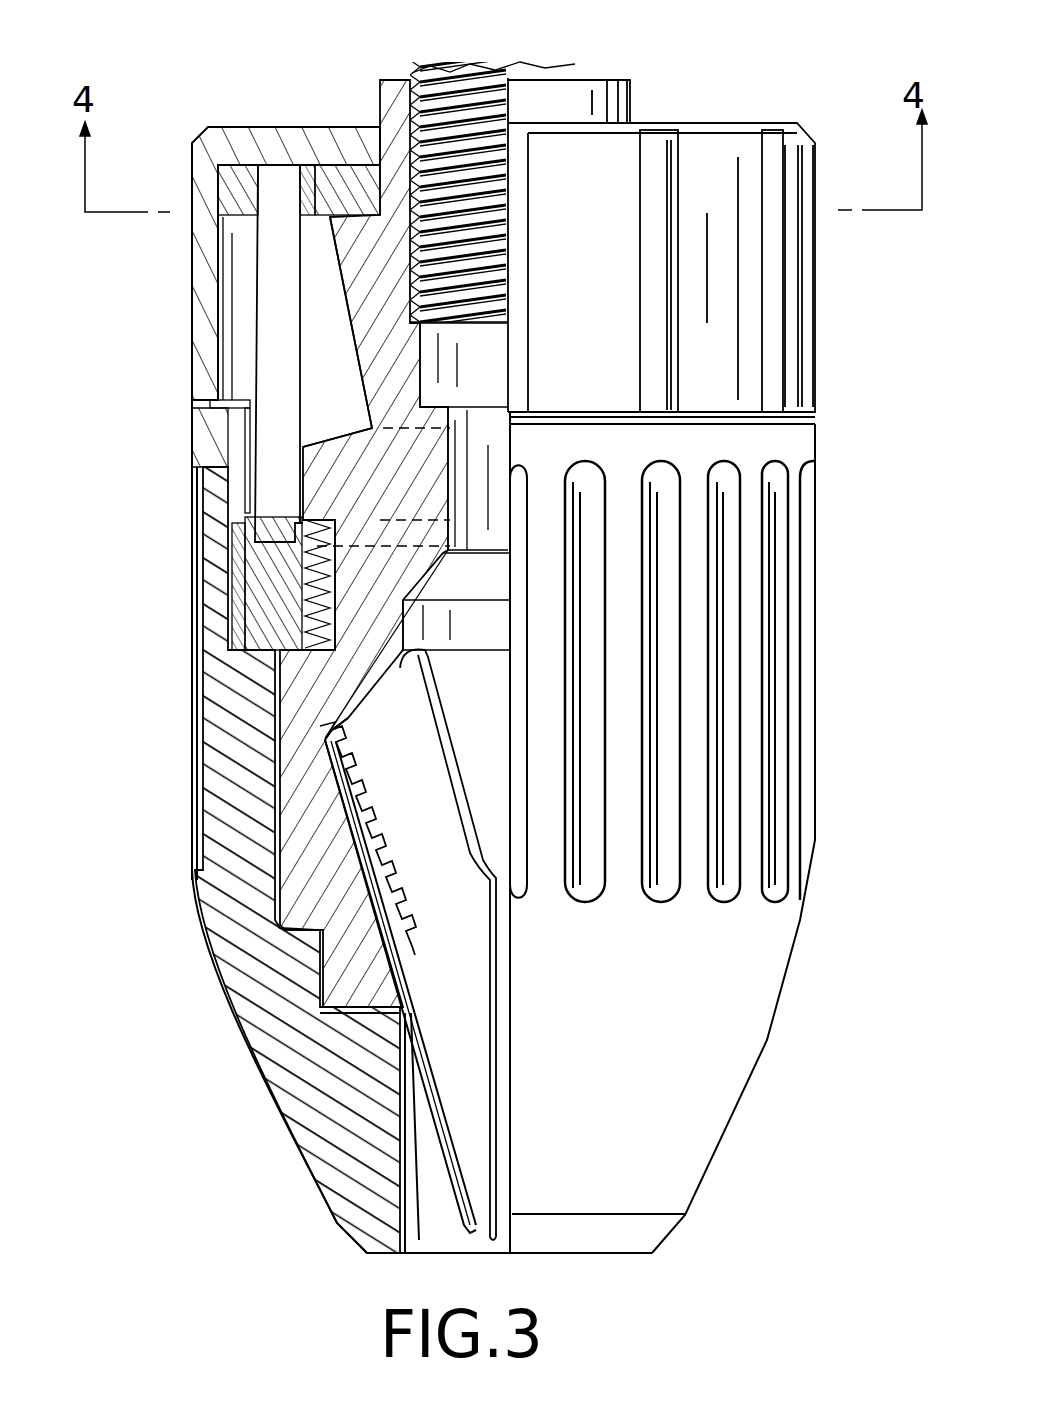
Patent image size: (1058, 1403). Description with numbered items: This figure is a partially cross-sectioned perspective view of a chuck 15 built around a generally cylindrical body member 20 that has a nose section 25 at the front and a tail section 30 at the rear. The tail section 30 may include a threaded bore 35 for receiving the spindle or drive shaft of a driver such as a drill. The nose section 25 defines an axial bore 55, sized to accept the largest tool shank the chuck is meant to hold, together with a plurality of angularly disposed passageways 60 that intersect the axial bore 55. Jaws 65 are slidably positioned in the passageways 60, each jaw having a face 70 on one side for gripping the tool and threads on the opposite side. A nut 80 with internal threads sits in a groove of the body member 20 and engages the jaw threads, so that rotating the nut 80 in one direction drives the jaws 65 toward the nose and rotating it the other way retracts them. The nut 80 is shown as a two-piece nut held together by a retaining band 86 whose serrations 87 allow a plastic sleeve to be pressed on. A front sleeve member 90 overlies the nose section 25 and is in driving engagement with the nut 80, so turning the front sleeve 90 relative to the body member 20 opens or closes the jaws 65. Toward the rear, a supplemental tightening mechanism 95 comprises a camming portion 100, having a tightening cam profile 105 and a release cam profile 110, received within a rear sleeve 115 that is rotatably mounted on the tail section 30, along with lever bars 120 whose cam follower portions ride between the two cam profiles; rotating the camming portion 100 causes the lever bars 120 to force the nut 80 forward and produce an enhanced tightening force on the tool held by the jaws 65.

The chuck 15 is at (126, 975).
The body member 20 is at (300, 938).
The nose section 25 is at (330, 1017).
The tail section 30 is at (377, 313).
The threaded bore 35 is at (400, 150).
The axial bore 55 is at (405, 1000).
The angularly disposed passageways 60 is at (300, 752).
The jaws 65 is at (417, 727).
The jaw face 70 is at (512, 1190).
The nut 80 is at (233, 547).
The retaining band 86 is at (233, 590).
The serrations 87 is at (212, 652).
The front sleeve member 90 is at (223, 928).
The supplemental tightening mechanism 95 is at (278, 86).
The camming portion 100 is at (232, 173).
The tightening cam profile 105 is at (307, 170).
The release cam profile 110 is at (233, 217).
The rear sleeve 115 is at (733, 125).
The lever bars 120 is at (243, 416).